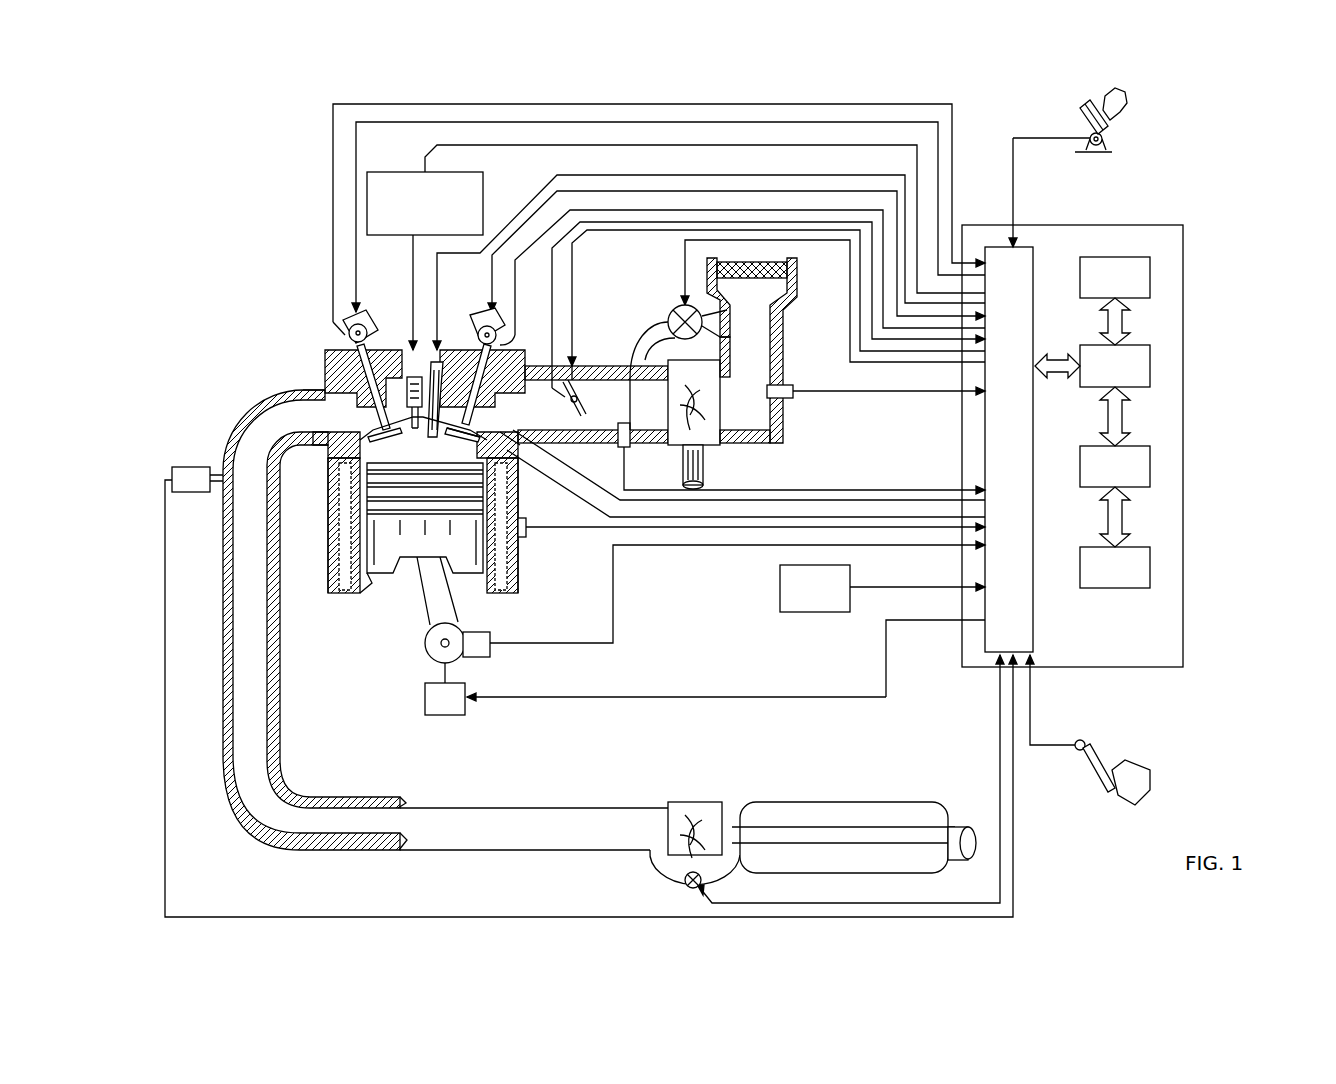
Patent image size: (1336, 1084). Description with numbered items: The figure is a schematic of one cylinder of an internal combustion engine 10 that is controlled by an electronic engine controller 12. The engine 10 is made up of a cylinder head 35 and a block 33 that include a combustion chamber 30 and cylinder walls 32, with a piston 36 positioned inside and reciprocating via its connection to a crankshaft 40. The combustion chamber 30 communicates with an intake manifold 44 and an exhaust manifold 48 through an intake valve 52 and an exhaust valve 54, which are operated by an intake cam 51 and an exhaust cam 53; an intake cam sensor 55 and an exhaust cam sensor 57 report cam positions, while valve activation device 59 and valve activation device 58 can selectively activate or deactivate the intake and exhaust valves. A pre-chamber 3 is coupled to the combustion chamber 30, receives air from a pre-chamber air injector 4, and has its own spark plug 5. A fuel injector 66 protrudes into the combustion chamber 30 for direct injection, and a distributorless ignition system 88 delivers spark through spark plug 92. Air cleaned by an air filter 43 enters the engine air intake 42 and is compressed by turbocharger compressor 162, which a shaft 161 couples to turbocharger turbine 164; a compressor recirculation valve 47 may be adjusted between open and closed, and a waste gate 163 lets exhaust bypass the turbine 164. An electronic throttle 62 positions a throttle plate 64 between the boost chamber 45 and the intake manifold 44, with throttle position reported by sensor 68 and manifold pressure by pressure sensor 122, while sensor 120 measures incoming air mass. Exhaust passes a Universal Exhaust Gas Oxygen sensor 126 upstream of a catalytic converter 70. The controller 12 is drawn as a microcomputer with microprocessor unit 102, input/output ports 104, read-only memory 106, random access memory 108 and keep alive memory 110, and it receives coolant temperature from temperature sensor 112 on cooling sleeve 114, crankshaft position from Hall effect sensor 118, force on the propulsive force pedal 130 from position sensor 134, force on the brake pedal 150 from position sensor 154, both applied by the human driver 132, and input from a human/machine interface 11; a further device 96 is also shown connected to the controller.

The internal combustion engine 10 is at (262, 302).
The electronic engine controller 12 is at (1183, 232).
The human/machine interface 11 is at (882, 588).
The pre-chamber 3 is at (482, 444).
The pre-chamber air injector 4 is at (516, 455).
The spark plug 5 is at (520, 440).
The combustion chamber 30 is at (340, 530).
The cylinder walls 32 is at (368, 582).
The block 33 is at (326, 490).
The cylinder head 35 is at (320, 353).
The piston 36 is at (407, 545).
The crankshaft 40 is at (428, 645).
The engine air intake 42 is at (628, 288).
The air filter 43 is at (762, 272).
The intake manifold 44 is at (552, 414).
The boost chamber 45 is at (647, 414).
The compressor recirculation valve 47 is at (680, 314).
The exhaust manifold 48 is at (309, 424).
The intake cam 51 is at (474, 360).
The intake valve 52 is at (470, 408).
The exhaust cam 53 is at (373, 352).
The exhaust valve 54 is at (322, 393).
The intake cam sensor 55 is at (503, 346).
The exhaust cam sensor 57 is at (338, 330).
The valve activation device 58 is at (368, 338).
The valve activation device 59 is at (478, 340).
The electronic throttle 62 is at (580, 402).
The throttle plate 64 is at (575, 415).
The fuel injector 66 is at (440, 362).
The throttle position sensor 68 is at (572, 378).
The catalytic converter 70 is at (795, 802).
The distributorless ignition system 88 is at (386, 172).
The spark plug 92 is at (410, 374).
The starter motor 96 is at (455, 715).
The microprocessor unit 102 is at (1150, 360).
The input/output ports 104 is at (1033, 262).
The read-only memory 106 is at (1150, 272).
The random access memory 108 is at (1150, 462).
The keep alive memory 110 is at (1150, 562).
The temperature sensor 112 is at (528, 530).
The cooling sleeve 114 is at (512, 560).
The Hall effect sensor 118 is at (488, 636).
The air mass sensor 120 is at (790, 385).
The pressure sensor 122 is at (620, 447).
The Universal Exhaust Gas Oxygen sensor 126 is at (172, 470).
The propulsive force pedal 130 is at (1080, 115).
The human driver 132 is at (1122, 100).
The position sensor 134 is at (1102, 140).
The brake pedal 150 is at (1100, 785).
The position sensor 154 is at (1078, 740).
The shaft 161 is at (688, 455).
The turbocharger compressor 162 is at (700, 440).
The waste gate 163 is at (687, 885).
The turbocharger turbine 164 is at (670, 803).